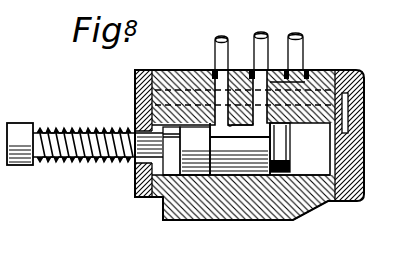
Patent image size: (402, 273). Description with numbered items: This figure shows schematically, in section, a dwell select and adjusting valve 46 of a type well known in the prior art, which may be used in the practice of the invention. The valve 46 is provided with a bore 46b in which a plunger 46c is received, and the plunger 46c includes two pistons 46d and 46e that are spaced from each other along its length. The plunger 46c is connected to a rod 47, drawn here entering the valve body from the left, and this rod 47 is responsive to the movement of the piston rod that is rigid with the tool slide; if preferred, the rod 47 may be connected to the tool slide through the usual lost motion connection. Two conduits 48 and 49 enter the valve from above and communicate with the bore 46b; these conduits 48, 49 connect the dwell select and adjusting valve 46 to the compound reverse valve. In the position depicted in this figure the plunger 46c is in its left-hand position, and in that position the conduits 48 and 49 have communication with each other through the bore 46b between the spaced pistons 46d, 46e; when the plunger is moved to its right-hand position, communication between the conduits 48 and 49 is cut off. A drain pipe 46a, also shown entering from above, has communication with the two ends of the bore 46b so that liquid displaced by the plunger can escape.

The dwell select and adjusting valve 46 is at (285, 208).
The drain pipe 46a is at (302, 41).
The bore 46b is at (222, 176).
The plunger 46c is at (248, 161).
The piston 46d is at (137, 168).
The piston 46e is at (303, 211).
The rod 47 is at (98, 132).
The conduit 48 is at (259, 34).
The conduit 49 is at (218, 50).